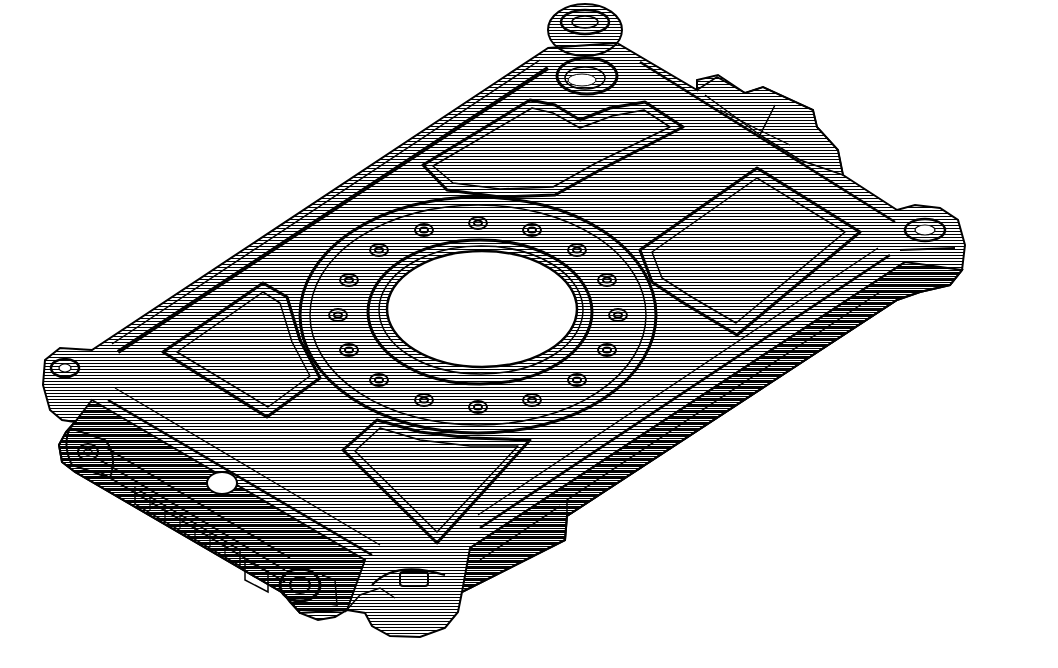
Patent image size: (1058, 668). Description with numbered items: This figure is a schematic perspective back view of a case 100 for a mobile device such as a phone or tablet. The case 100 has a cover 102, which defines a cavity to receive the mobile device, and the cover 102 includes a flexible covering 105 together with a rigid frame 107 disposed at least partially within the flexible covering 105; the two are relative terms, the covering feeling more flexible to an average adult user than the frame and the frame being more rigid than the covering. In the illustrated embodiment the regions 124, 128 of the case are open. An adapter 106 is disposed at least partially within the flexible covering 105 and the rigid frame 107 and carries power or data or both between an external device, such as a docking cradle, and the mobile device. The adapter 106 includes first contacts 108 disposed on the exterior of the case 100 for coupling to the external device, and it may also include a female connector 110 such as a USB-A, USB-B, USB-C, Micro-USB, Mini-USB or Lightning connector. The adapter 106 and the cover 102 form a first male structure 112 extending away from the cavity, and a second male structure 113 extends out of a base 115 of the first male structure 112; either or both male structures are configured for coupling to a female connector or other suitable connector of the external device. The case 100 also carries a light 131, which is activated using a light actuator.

The case 100 is at (256, 150).
The light 131 is at (222, 466).
The open region 124 is at (612, 62).
The rigid frame 107 is at (793, 223).
The open region 128 is at (501, 320).
The flexible covering 105 is at (783, 377).
The cover 102 is at (677, 453).
The female connector 110 is at (97, 467).
The second male structure 113 is at (133, 510).
The first contacts 108 is at (197, 550).
The adapter 106 is at (247, 577).
The first male structure 112 is at (287, 598).
The base 115 is at (330, 620).